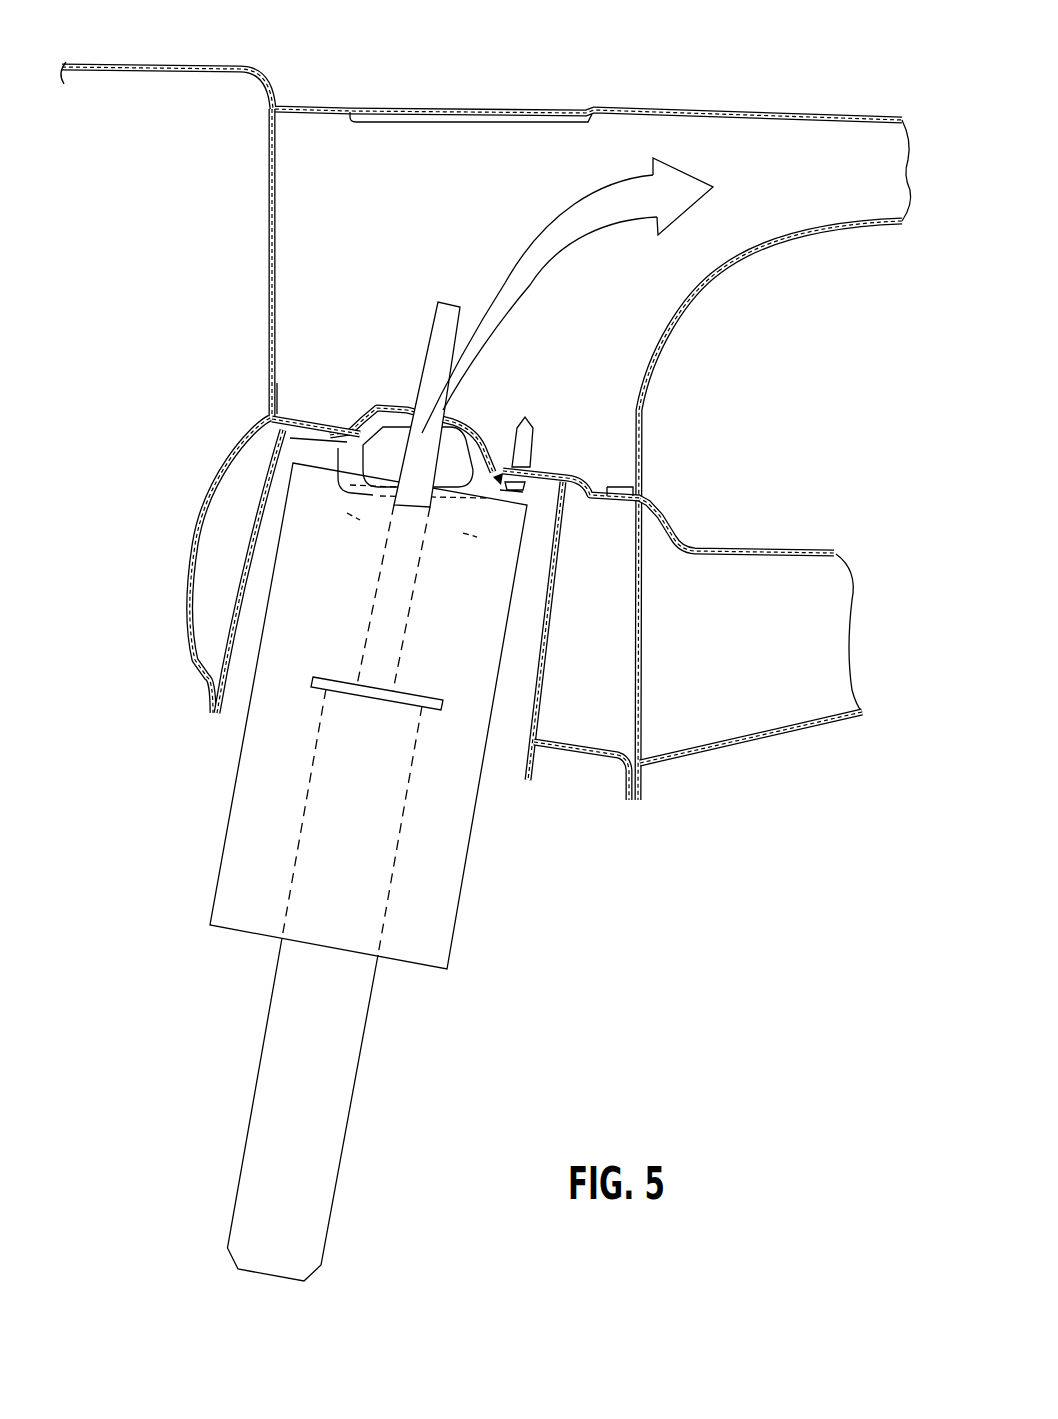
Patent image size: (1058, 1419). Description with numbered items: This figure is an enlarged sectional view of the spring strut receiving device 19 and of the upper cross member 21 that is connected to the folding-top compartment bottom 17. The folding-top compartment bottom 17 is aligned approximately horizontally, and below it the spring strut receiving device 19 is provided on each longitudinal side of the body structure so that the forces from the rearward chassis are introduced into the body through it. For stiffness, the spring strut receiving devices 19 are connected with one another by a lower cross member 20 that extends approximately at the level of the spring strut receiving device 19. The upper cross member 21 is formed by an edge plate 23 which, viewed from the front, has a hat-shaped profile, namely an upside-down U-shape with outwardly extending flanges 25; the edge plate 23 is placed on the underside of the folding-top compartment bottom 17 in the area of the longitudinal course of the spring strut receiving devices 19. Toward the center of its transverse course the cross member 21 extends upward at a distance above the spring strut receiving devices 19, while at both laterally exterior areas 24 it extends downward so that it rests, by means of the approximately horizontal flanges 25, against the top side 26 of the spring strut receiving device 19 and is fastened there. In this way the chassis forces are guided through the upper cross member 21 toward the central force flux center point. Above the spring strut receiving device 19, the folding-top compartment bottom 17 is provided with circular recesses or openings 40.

The folding-top compartment bottom 17 is at (799, 110).
The circular recesses or openings 40 is at (463, 112).
The upper cross member 21 is at (863, 182).
The edge plate 23 is at (803, 233).
The laterally exterior areas 24 is at (678, 349).
The flanges 25 is at (620, 484).
The top side 26 is at (552, 456).
The lower cross member 20 is at (857, 575).
The spring strut receiving device 19 is at (237, 713).